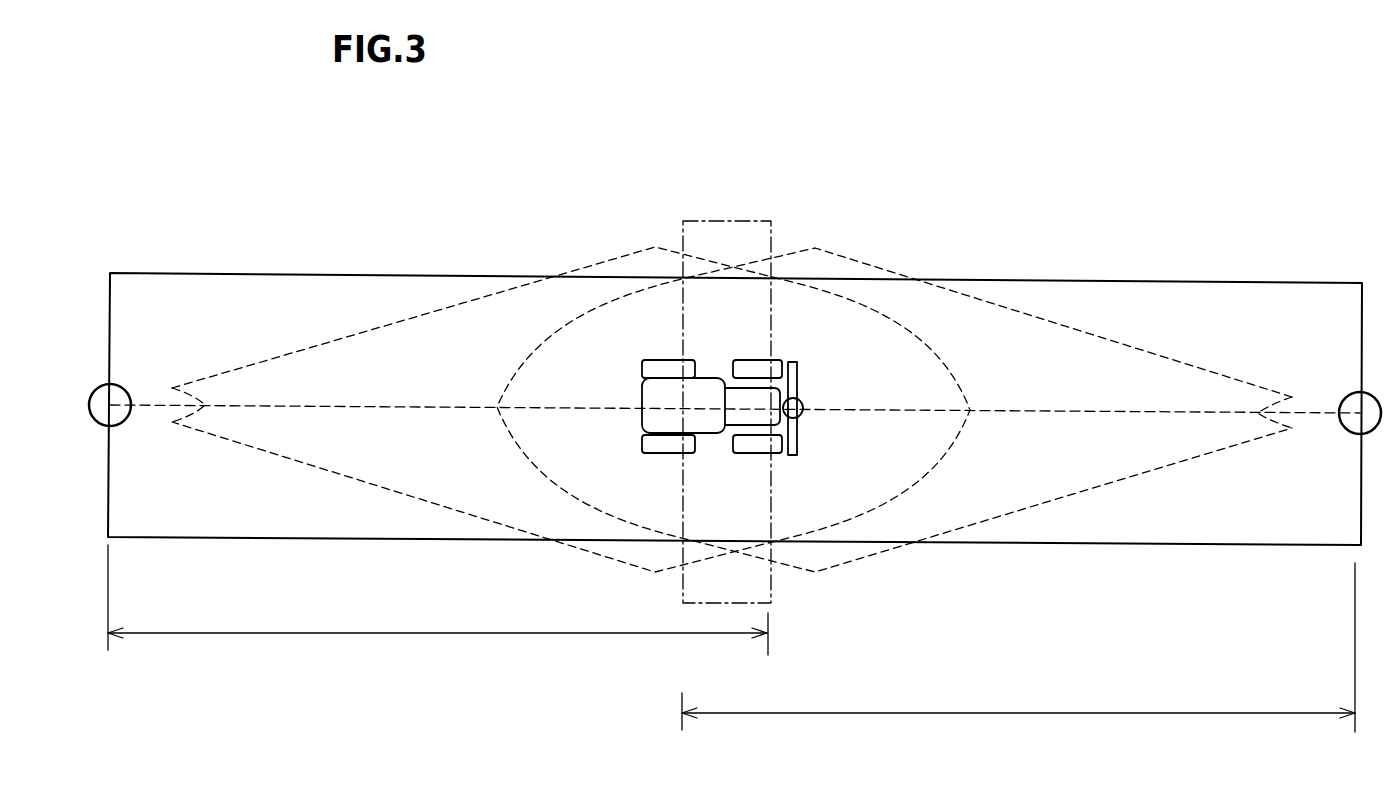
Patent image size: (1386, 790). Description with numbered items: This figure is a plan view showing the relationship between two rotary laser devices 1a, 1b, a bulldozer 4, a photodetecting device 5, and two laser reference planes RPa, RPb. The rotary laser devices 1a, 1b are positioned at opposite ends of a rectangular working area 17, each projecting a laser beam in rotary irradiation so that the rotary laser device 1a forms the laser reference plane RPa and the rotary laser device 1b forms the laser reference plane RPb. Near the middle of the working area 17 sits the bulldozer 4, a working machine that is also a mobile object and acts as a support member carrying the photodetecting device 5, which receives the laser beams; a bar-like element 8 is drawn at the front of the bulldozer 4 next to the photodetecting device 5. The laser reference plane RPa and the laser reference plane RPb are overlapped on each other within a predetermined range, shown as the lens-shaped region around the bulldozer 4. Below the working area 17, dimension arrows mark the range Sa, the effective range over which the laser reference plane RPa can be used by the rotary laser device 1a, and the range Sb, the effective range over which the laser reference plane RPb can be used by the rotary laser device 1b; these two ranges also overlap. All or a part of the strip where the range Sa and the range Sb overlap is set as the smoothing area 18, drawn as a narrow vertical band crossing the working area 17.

The rotary laser device 1a is at (125, 388).
The rotary laser device 1b is at (1345, 398).
The bulldozer 4 is at (642, 418).
The photodetecting device 5 is at (803, 412).
The work implement 8 is at (797, 447).
The working area 17 is at (1200, 281).
The smoothing area 18 is at (742, 220).
The laser reference plane RPa is at (427, 310).
The laser reference plane RPb is at (1067, 323).
The range Sa is at (438, 600).
The range Sb is at (1018, 647).